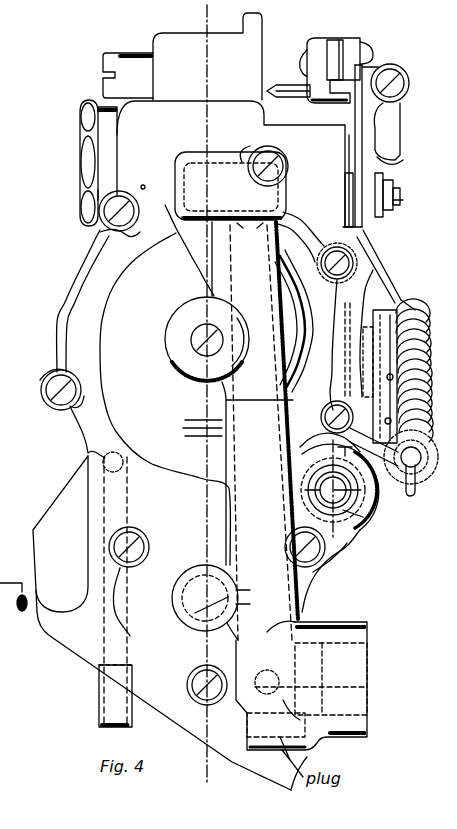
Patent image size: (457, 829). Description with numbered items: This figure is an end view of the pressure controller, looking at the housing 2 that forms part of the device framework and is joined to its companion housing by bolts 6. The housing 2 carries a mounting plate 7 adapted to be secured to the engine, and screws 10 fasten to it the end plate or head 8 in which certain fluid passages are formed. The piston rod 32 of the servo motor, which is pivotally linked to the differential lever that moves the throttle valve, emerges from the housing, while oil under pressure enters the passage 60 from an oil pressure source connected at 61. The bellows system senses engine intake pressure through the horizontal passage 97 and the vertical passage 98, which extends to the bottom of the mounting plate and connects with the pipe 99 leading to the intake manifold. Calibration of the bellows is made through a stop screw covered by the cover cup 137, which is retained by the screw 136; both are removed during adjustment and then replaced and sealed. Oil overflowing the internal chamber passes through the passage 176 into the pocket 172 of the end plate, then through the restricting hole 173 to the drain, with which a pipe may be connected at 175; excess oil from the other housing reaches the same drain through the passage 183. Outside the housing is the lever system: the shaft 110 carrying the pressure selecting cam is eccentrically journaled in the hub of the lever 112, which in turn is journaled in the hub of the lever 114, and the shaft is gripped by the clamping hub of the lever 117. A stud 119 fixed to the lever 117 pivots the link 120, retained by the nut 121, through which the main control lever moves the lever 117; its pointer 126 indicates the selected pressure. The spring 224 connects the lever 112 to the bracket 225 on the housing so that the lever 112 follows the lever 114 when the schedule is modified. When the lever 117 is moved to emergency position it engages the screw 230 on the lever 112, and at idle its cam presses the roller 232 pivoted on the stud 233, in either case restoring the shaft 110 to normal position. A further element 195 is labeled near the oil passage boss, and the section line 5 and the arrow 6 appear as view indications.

The housing 2 is at (158, 43).
The section line 5 is at (210, 12).
The bolts 6 is at (40, 78).
The mounting plate 7 is at (73, 660).
The end plate or head 8 is at (66, 308).
The screws 10 is at (101, 230).
The piston rod 32 is at (22, 582).
The passage 60 is at (347, 497).
The oil pressure connection 61 is at (363, 517).
The horizontal passage 97 is at (92, 457).
The vertical passage 98 is at (104, 634).
The pipe 99 is at (99, 699).
The shaft 110 is at (401, 182).
The lever 112 is at (355, 118).
The lever 114 is at (353, 233).
The lever 117 is at (314, 37).
The stud 119 is at (300, 58).
The link 120 is at (348, 40).
The nut 121 is at (366, 44).
The pointer 126 is at (286, 85).
The screw 136 is at (193, 341).
The cover cup 137 is at (168, 330).
The pocket 172 is at (184, 600).
The restricting hole 173 is at (195, 613).
The pipe connection 175 is at (357, 648).
The passage 176 is at (188, 194).
The passage 183 is at (367, 687).
The shaft 195 is at (347, 490).
The spring 224 is at (418, 304).
The bracket 225 is at (424, 470).
The screw 230 is at (393, 69).
The roller 232 is at (402, 160).
The stud 233 is at (401, 200).